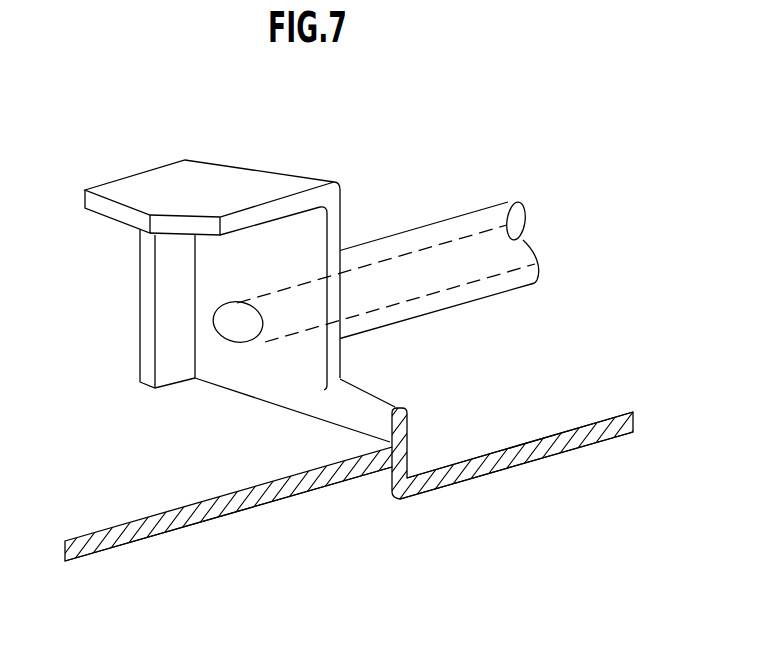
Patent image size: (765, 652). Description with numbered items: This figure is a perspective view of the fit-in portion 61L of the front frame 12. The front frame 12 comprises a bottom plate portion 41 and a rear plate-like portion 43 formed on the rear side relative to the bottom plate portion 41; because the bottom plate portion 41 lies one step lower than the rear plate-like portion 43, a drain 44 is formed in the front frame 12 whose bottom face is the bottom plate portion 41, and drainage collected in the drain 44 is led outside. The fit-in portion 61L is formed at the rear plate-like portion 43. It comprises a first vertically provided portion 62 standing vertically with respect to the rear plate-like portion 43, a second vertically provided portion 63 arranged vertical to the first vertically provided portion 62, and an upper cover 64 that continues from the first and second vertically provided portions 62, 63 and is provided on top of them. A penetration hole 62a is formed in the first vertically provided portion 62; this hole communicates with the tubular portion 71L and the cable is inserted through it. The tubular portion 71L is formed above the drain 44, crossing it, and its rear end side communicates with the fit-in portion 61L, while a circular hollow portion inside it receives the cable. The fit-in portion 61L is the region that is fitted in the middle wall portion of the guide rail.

The front frame 12 is at (468, 523).
The bottom plate portion 41 is at (542, 462).
The rear plate-like portion 43 is at (212, 520).
The drain 44 is at (473, 402).
The fit-in portion 61L is at (300, 160).
The first vertically provided portion 62 is at (227, 364).
The penetration hole 62a is at (245, 338).
The second vertically provided portion 63 is at (162, 292).
The upper cover 64 is at (162, 174).
The tubular portion 71L is at (440, 222).